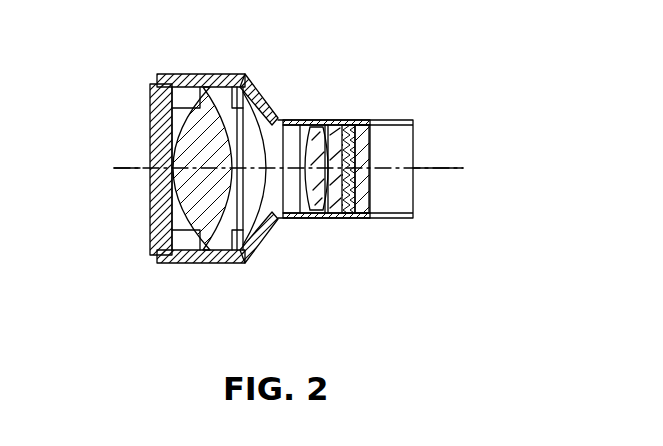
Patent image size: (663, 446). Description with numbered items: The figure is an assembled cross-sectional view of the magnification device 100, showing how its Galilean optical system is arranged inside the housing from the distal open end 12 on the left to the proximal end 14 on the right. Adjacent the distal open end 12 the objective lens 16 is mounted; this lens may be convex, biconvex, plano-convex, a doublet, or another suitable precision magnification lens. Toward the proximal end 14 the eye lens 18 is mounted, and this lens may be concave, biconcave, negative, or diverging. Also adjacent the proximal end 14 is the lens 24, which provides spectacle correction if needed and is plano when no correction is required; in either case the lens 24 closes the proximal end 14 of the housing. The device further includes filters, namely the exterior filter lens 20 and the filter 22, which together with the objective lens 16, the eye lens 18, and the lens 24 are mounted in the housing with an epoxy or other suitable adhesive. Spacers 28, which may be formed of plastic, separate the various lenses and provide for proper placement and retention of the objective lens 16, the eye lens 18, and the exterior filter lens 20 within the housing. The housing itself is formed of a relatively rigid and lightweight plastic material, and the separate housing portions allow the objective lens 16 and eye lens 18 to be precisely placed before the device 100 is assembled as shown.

The magnification device 100 is at (412, 86).
The distal open end 12 is at (130, 155).
The proximal end 14 is at (440, 143).
The objective lens 16 is at (207, 238).
The eye lens 18 is at (313, 207).
The exterior filter lens 20 is at (155, 90).
The filter 22 is at (340, 207).
The spectacle correction lens 24 is at (366, 205).
The spacer 28 is at (347, 137).